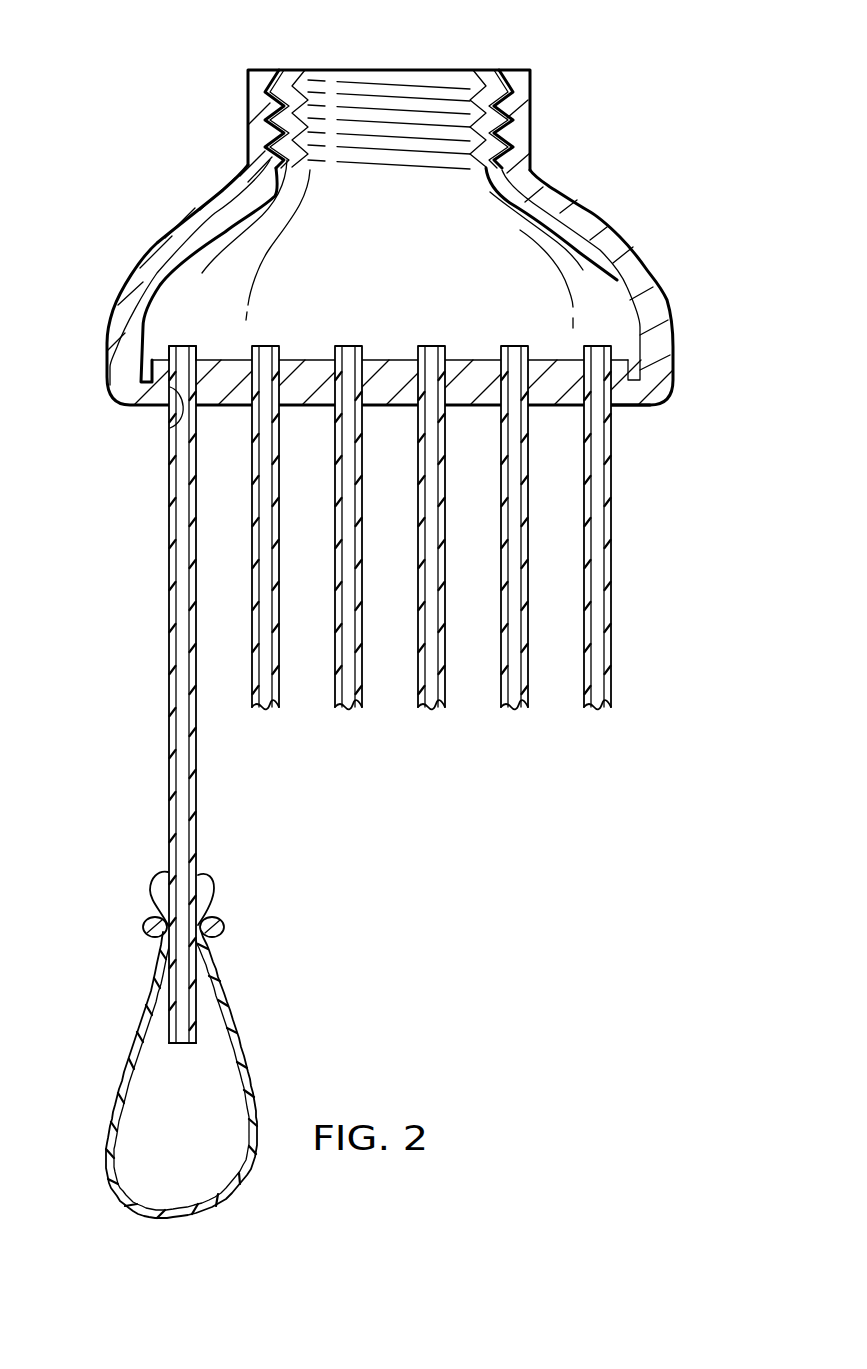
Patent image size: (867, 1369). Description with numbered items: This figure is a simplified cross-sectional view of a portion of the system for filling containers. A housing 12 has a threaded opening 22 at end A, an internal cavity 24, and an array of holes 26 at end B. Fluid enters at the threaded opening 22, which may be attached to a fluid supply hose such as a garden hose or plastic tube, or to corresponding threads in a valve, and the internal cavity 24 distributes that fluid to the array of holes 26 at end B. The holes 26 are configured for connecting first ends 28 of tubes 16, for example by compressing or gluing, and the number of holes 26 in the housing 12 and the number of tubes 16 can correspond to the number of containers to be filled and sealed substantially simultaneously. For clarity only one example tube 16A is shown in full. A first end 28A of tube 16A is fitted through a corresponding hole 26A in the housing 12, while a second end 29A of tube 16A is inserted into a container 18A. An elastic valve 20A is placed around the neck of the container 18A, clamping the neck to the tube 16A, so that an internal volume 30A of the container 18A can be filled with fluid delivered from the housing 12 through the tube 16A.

The housing 12 is at (178, 223).
The end A is at (462, 70).
The threaded opening 22 is at (355, 103).
The internal cavity 24 is at (580, 273).
The array of holes 26 is at (338, 377).
The hole 26A is at (168, 427).
The first ends 28 is at (452, 350).
The first end 28A is at (200, 352).
The end B is at (630, 407).
The tubes 16 is at (161, 792).
The tube 16A is at (168, 592).
The container 18A is at (123, 1190).
The elastic valve 20A is at (145, 935).
The second end 29A is at (198, 1040).
The internal volume 30A is at (213, 1167).